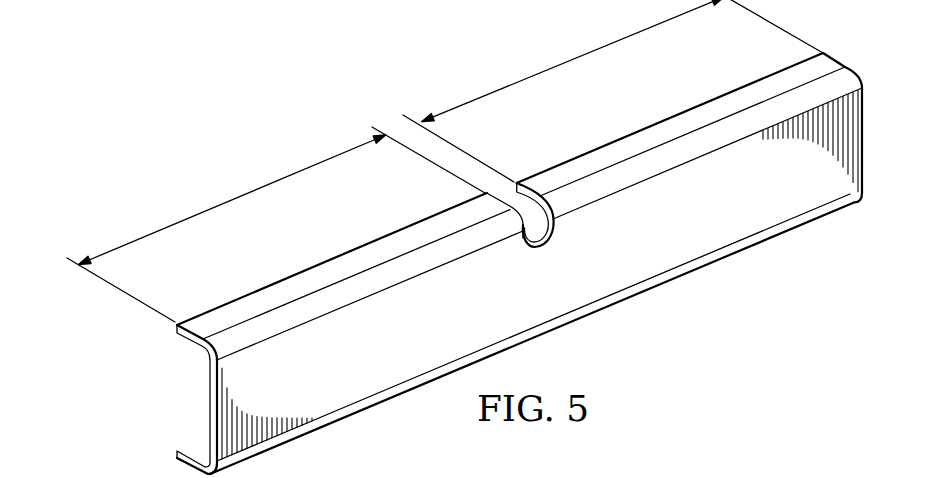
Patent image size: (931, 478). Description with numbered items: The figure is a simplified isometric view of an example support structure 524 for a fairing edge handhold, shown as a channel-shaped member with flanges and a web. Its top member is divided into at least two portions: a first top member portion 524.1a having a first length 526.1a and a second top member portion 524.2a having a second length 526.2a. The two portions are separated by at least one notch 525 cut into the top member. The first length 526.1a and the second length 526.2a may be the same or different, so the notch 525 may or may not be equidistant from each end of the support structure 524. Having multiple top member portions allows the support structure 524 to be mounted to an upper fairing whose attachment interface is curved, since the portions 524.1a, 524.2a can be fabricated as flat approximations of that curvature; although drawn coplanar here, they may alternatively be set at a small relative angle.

The support structure 524 is at (297, 123).
The first top member portion 524.1a is at (335, 272).
The second top member portion 524.2a is at (673, 132).
The notch 525 is at (495, 185).
The first length 526.1a is at (230, 200).
The second length 526.2a is at (572, 58).